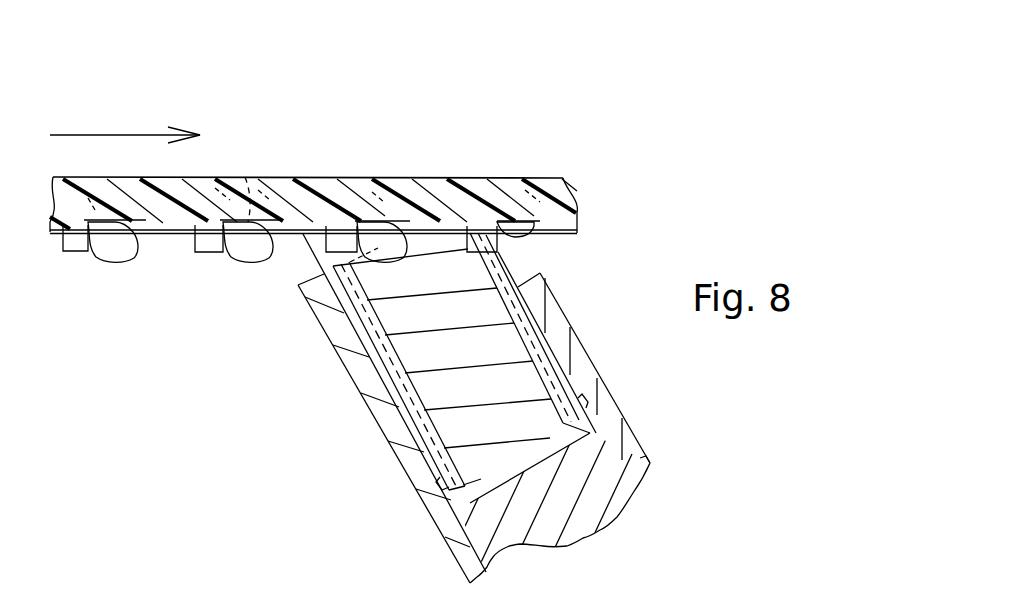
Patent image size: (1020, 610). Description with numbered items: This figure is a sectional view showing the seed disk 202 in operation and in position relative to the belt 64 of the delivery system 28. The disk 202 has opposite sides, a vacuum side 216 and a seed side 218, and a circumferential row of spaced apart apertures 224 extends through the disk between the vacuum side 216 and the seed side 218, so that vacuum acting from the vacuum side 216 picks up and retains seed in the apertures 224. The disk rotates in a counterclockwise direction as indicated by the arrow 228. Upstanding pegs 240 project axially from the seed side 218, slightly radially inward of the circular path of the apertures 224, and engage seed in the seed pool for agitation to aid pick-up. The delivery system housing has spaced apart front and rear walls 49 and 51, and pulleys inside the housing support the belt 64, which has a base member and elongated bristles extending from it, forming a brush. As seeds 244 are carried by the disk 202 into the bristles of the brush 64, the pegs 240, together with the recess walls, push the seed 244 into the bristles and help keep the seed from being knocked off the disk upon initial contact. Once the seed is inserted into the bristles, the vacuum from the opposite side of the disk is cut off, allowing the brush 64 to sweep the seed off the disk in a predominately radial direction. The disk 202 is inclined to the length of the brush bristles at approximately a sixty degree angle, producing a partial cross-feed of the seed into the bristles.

The delivery system 28 is at (650, 428).
The front wall 49 is at (378, 422).
The rear wall 51 is at (608, 387).
The belt 64 is at (473, 312).
The seed disk 202 is at (375, 156).
The vacuum side 216 is at (318, 177).
The seed side 218 is at (163, 236).
The apertures 224 is at (245, 177).
The arrow 228 is at (110, 133).
The upstanding peg 240 is at (72, 245).
The seeds 244 is at (115, 250).